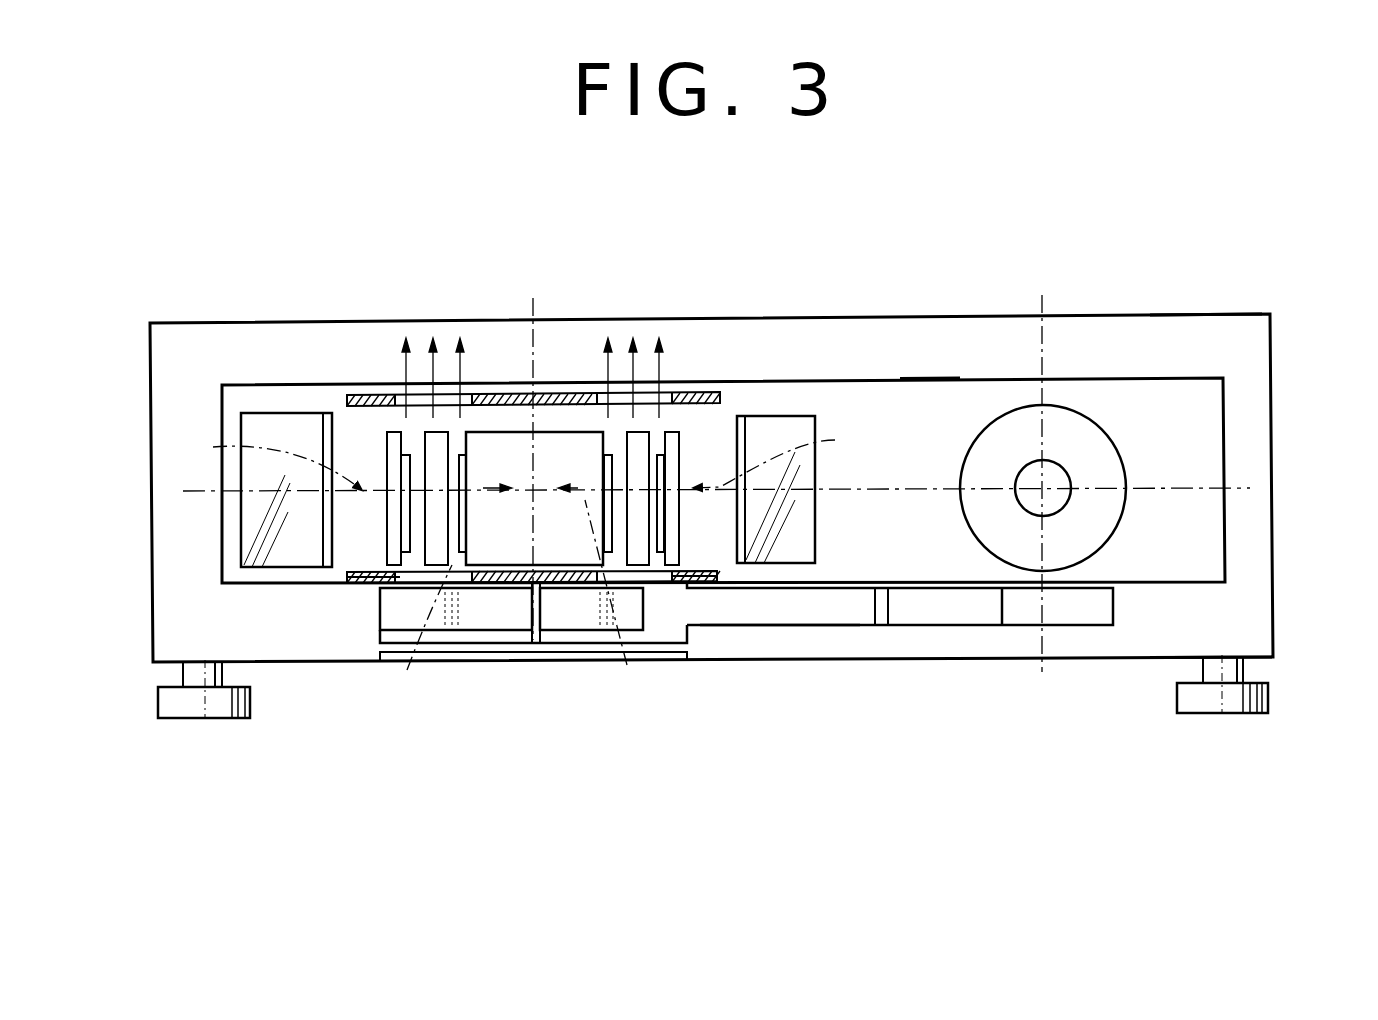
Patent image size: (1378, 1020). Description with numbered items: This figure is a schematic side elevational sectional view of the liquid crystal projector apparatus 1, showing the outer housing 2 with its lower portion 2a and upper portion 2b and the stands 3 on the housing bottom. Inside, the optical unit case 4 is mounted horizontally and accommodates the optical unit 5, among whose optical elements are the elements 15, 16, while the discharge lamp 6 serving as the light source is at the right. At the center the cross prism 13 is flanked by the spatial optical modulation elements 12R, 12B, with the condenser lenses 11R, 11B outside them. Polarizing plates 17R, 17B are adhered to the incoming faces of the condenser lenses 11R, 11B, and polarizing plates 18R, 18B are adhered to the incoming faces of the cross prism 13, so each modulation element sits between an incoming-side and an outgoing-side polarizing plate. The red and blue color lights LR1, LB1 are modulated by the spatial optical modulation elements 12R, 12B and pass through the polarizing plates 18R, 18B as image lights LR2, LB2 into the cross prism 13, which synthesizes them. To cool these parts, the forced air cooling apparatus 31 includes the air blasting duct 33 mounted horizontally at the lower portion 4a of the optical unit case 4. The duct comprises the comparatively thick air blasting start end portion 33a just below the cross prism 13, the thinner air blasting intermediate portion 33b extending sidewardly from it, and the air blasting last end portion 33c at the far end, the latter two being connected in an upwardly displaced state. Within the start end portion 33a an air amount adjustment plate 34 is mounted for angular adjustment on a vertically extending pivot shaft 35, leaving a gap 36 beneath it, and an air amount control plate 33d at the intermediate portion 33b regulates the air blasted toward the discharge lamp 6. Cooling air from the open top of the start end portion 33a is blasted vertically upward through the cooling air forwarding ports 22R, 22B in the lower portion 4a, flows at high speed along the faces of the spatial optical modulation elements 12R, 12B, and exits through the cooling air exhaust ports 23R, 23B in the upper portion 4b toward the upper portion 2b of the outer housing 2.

The liquid crystal projector apparatus 1 is at (158, 283).
The outer housing 2 is at (1130, 315).
The lower portion of outer housing 2a is at (1255, 660).
The upper portion of outer housing 2b is at (1218, 315).
The stands 3 is at (192, 706).
The optical unit case 4 is at (932, 378).
The lower portion of optical unit case 4a is at (565, 583).
The upper portion of optical unit case 4b is at (549, 393).
The optical unit 5 is at (880, 377).
The discharge lamp 6 is at (1107, 452).
The condenser lens 11B is at (393, 457).
The condenser lens 11R is at (673, 437).
The spatial optical modulation element 12B is at (437, 432).
The spatial optical modulation element 12R is at (637, 432).
The cross prism 13 is at (490, 553).
The red reflecting mirror 15 is at (805, 525).
The blue reflecting mirror 16 is at (250, 506).
The polarizing plate 17B is at (407, 460).
The polarizing plate 17R is at (661, 455).
The polarizing plate 18B is at (462, 455).
The polarizing plate 18R is at (608, 455).
The cooling air forwarding port 22B is at (407, 578).
The cooling air forwarding port 22R is at (658, 583).
The cooling air exhaust port 23B is at (413, 395).
The cooling air exhaust port 23R is at (680, 395).
The forced air cooling apparatus 31 is at (370, 622).
The air blasting duct 33 is at (842, 628).
The air blasting start end portion 33a is at (490, 633).
The air blasting intermediate portion 33b is at (783, 625).
The air blasting last end portion 33c is at (1092, 627).
The air amount control plate 33d is at (888, 605).
The air amount adjustment plate 34 is at (550, 620).
The pivot shaft 35 is at (531, 610).
The gap 36 is at (380, 638).
The blue color light LB1 is at (261, 460).
The blue image light LB2 is at (407, 633).
The red color light LR1 is at (791, 455).
The red image light LR2 is at (626, 600).